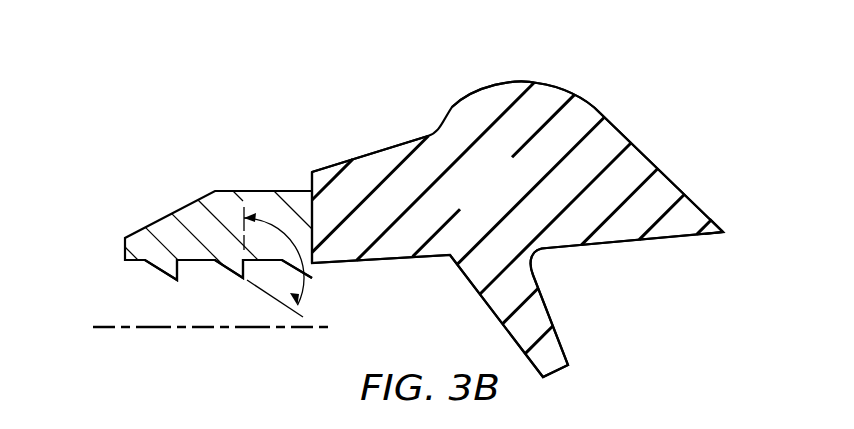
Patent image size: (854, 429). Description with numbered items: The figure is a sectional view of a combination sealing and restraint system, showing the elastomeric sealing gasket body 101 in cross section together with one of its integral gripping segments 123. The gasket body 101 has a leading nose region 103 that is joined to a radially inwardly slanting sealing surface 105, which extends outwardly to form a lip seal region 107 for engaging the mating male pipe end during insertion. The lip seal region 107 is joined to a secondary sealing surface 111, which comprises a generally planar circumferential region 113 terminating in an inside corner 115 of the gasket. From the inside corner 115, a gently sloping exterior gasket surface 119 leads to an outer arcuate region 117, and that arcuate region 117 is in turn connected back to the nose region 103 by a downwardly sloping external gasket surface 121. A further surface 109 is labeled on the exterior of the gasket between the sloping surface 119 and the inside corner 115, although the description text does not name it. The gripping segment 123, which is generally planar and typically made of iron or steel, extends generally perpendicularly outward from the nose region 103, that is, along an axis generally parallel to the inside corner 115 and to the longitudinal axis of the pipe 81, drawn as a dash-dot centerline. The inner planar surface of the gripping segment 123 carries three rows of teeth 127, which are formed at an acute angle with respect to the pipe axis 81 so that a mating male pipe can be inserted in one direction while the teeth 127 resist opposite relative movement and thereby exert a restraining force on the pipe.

The longitudinal axis of the pipe 81 is at (212, 329).
The sealing gasket body 101 is at (511, 195).
The leading nose region 103 is at (310, 210).
The radially inwardly slanting sealing surface 105 is at (375, 262).
The lip seal region 107 is at (505, 302).
The inclined side surface 109 is at (655, 200).
The secondary sealing surface 111 is at (532, 257).
The generally planar circumferential region 113 is at (655, 243).
The inside corner 115 is at (712, 228).
The outer arcuate region 117 is at (517, 83).
The gently sloping exterior gasket surface 119 is at (645, 151).
The downwardly sloping external gasket surface 121 is at (377, 150).
The gripping segment 123 is at (195, 218).
The teeth 127 is at (162, 272).